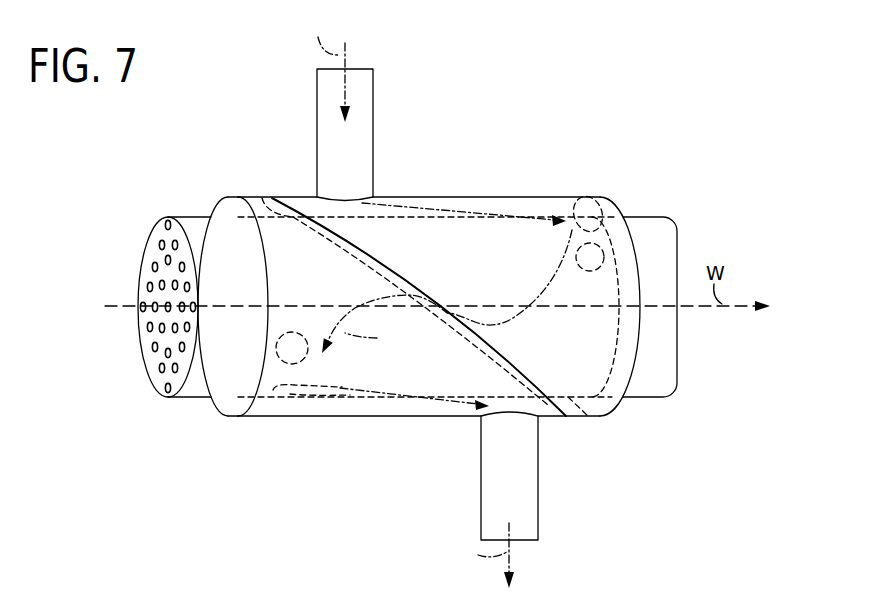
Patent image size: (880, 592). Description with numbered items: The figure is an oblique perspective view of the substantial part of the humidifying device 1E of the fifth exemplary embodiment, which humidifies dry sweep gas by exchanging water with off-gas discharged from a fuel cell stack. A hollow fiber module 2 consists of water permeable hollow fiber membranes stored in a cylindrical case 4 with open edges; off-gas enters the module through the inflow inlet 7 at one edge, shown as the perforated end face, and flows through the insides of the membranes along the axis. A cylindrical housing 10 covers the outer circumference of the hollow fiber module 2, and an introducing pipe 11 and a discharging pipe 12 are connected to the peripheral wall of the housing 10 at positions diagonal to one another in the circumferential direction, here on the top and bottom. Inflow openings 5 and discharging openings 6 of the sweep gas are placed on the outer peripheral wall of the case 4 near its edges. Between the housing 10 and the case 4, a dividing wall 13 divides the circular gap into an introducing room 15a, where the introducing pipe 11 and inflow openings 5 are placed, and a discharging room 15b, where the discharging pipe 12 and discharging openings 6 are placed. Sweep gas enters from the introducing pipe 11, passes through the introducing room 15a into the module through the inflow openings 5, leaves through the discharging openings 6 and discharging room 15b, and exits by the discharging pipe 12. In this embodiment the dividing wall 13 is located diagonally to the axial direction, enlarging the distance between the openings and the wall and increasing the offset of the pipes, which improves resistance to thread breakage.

The humidifying device 1E is at (189, 170).
The hollow fiber module 2 is at (168, 203).
The case 4 is at (196, 400).
The inflow openings 5 is at (606, 194).
The discharging openings 6 is at (302, 355).
The inflow inlet 7 is at (160, 369).
The housing 10 is at (598, 418).
The introducing pipe 11 is at (375, 116).
The discharging pipe 12 is at (540, 479).
The dividing wall 13 is at (400, 272).
The introducing room 15a is at (549, 212).
The discharging room 15b is at (292, 407).